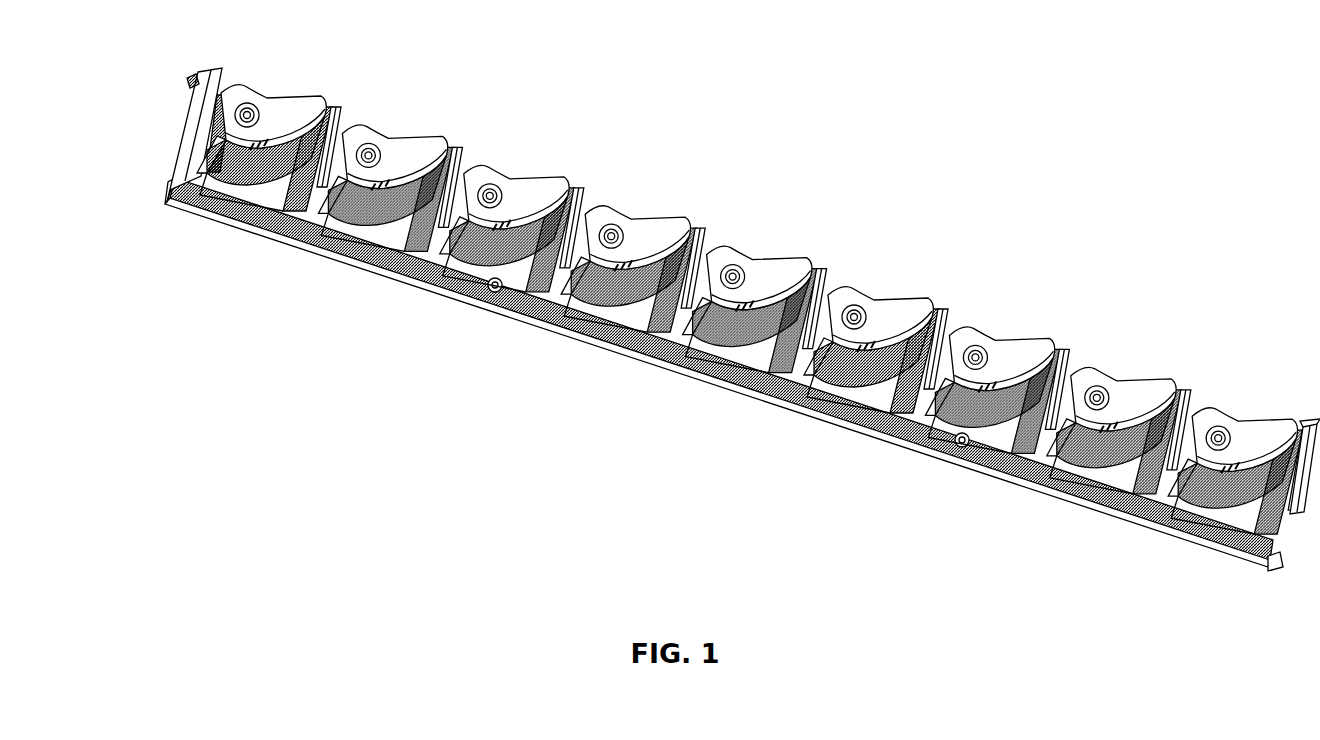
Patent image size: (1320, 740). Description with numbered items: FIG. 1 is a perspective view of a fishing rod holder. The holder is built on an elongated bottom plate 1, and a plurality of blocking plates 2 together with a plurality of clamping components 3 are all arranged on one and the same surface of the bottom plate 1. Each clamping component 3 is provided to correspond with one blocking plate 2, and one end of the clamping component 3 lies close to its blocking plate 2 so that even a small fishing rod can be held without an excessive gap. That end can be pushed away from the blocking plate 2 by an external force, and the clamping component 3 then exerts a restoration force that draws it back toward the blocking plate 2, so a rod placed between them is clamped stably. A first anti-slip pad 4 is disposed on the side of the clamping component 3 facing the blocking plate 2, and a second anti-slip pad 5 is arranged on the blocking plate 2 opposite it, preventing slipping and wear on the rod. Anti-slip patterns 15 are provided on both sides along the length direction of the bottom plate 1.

The bottom plate 1 is at (163, 201).
The blocking plate 2 is at (295, 230).
The clamping component 3 is at (292, 96).
The first anti-slip pad 4 is at (207, 187).
The second anti-slip pad 5 is at (276, 220).
The anti-slip pattern 15 is at (166, 200).